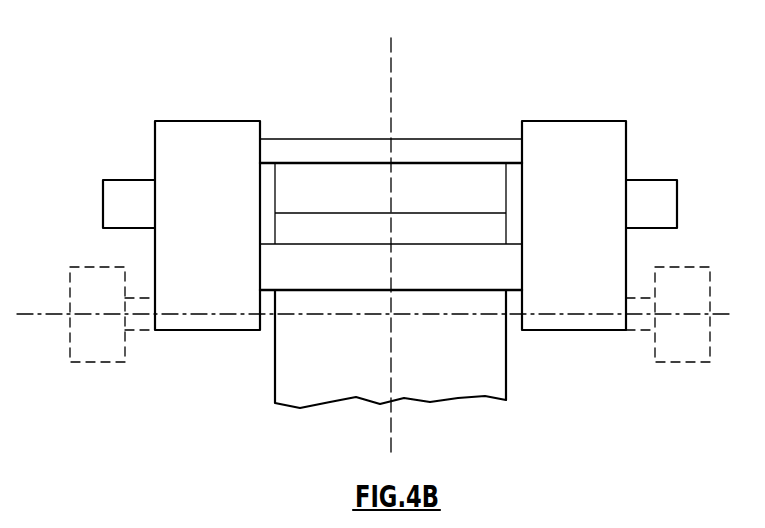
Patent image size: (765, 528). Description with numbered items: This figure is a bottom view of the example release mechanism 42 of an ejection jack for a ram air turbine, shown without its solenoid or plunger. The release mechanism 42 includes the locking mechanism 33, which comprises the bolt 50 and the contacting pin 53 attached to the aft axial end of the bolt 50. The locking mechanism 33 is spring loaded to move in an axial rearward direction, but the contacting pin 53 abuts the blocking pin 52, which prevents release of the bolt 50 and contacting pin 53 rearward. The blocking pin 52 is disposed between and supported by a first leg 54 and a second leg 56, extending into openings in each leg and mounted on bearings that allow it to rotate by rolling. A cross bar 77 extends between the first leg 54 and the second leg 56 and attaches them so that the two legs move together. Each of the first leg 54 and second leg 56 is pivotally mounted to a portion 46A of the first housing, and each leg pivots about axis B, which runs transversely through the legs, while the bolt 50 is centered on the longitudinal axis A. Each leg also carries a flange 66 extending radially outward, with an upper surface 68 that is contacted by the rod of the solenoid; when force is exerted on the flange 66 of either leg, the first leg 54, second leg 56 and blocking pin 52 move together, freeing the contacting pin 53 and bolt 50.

The release mechanism 42 is at (173, 80).
The longitudinal axis A is at (390, 88).
The axis B is at (50, 314).
The blocking pin 52 is at (373, 154).
The contacting pin 53 is at (467, 180).
The first leg 54 is at (213, 325).
The second leg 56 is at (575, 322).
The flange 66 is at (103, 208).
The upper surface 68 is at (130, 205).
The cross bar 77 is at (293, 272).
The bolt 50 is at (440, 382).
The portion of the first housing 46A is at (100, 362).
The locking mechanism 33 is at (517, 372).